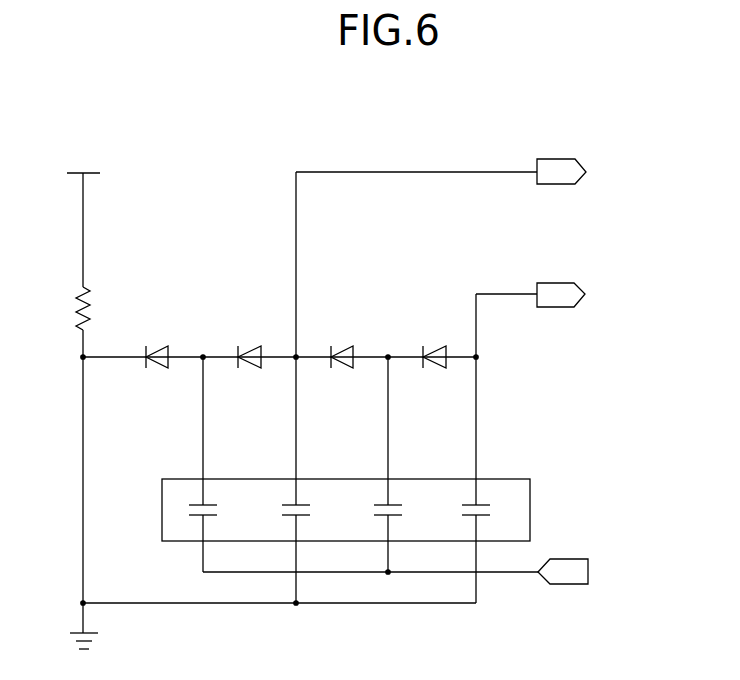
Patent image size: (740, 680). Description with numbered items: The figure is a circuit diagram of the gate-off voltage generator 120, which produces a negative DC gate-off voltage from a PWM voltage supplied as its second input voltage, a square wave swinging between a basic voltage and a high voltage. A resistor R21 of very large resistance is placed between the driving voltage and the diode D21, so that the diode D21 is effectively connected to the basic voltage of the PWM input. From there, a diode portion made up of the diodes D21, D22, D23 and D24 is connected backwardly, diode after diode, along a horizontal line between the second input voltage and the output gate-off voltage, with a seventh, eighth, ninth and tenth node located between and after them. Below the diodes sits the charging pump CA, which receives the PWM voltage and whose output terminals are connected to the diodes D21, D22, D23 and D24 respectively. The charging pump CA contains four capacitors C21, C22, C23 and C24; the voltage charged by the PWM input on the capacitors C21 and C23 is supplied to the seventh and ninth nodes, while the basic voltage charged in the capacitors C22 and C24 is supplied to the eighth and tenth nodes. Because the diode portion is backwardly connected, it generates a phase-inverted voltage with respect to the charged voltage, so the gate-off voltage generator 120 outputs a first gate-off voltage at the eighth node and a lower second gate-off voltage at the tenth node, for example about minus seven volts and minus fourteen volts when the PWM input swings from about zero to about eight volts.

The gate-off voltage generator 120 is at (657, 107).
The resistor R21 is at (64, 308).
The diode D21 is at (154, 371).
The diode D22 is at (247, 371).
The diode D23 is at (339, 371).
The diode D24 is at (432, 371).
The charging pump CA is at (328, 510).
The capacitor C21 is at (216, 522).
The capacitor C22 is at (309, 522).
The capacitor C23 is at (401, 522).
The capacitor C24 is at (489, 522).